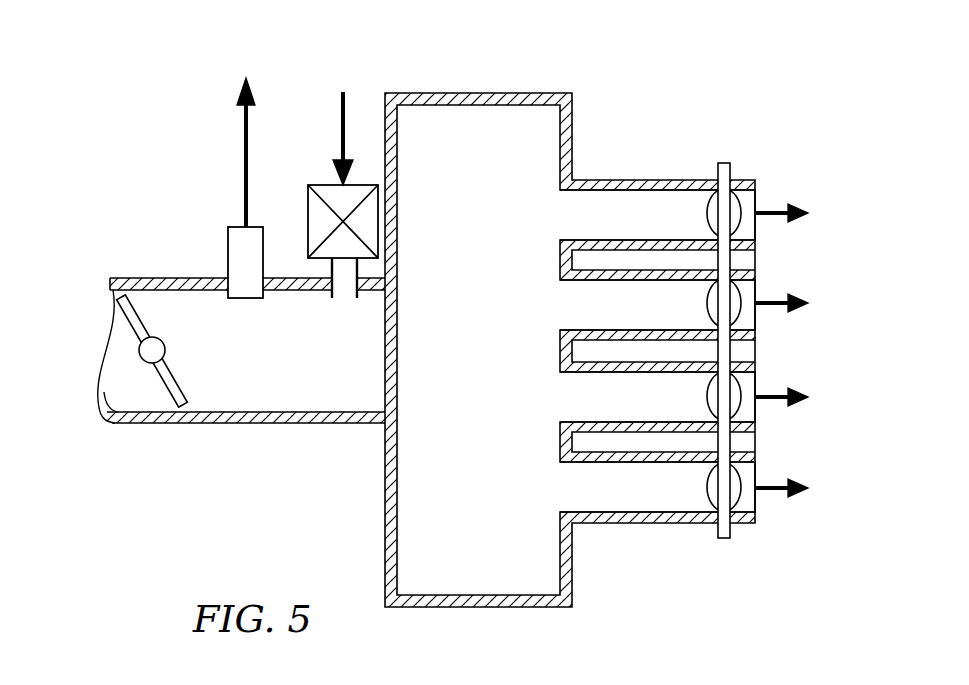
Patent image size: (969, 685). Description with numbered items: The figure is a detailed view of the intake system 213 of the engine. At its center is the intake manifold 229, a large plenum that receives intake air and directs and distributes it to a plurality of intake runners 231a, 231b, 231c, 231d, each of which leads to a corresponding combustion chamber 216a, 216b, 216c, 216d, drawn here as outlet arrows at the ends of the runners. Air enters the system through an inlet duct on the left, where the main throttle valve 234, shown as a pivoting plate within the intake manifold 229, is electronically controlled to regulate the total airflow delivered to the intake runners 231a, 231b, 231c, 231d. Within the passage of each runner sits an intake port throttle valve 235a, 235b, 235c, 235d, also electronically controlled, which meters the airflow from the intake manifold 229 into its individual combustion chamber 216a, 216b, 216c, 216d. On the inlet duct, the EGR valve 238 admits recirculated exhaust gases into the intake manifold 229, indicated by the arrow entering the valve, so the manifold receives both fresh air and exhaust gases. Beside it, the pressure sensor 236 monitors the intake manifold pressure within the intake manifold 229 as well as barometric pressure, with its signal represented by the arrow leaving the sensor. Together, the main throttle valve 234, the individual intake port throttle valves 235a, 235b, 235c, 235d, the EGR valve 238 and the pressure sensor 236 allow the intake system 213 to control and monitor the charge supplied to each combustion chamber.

The intake system 213 is at (471, 330).
The intake manifold 229 is at (502, 361).
The intake runner 231a is at (657, 215).
The intake runner 231b is at (657, 305).
The intake runner 231c is at (657, 397).
The intake runner 231d is at (657, 487).
The intake port throttle valve 235a is at (738, 199).
The intake port throttle valve 235b is at (738, 289).
The intake port throttle valve 235c is at (738, 382).
The intake port throttle valve 235d is at (738, 473).
The combustion chamber 216a is at (775, 212).
The combustion chamber 216b is at (775, 302).
The combustion chamber 216c is at (775, 396).
The combustion chamber 216d is at (775, 487).
The pressure sensor 236 is at (238, 242).
The EGR valve 238 is at (332, 193).
The main throttle valve 234 is at (130, 388).